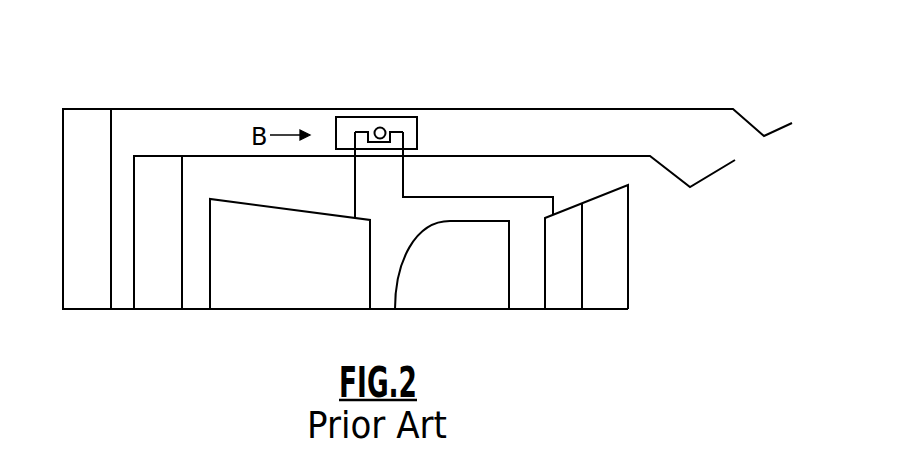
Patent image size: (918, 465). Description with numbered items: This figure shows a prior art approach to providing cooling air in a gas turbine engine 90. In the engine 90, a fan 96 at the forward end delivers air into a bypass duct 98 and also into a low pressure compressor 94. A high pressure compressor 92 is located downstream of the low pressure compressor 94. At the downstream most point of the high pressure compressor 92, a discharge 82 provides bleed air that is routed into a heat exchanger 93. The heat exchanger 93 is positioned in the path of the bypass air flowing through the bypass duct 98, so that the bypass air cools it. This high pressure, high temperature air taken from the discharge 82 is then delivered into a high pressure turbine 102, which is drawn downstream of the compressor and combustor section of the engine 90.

The engine 90 is at (350, 54).
The fan 96 is at (93, 130).
The bypass duct 98 is at (227, 130).
The low pressure compressor 94 is at (158, 293).
The high pressure compressor 92 is at (328, 289).
The heat exchanger 93 is at (338, 118).
The discharge 82 is at (355, 217).
The high pressure turbine 102 is at (562, 222).